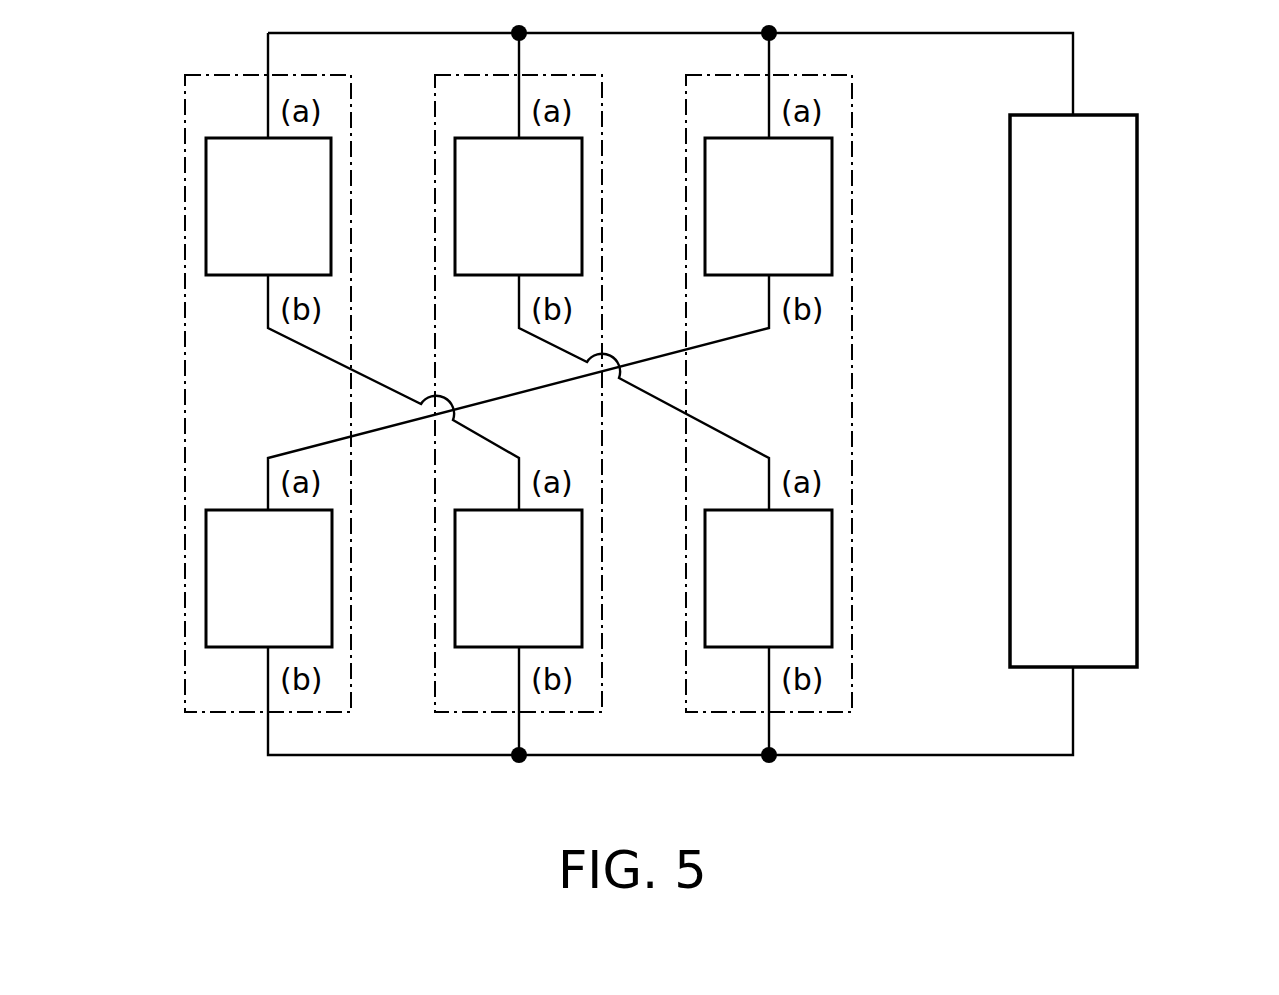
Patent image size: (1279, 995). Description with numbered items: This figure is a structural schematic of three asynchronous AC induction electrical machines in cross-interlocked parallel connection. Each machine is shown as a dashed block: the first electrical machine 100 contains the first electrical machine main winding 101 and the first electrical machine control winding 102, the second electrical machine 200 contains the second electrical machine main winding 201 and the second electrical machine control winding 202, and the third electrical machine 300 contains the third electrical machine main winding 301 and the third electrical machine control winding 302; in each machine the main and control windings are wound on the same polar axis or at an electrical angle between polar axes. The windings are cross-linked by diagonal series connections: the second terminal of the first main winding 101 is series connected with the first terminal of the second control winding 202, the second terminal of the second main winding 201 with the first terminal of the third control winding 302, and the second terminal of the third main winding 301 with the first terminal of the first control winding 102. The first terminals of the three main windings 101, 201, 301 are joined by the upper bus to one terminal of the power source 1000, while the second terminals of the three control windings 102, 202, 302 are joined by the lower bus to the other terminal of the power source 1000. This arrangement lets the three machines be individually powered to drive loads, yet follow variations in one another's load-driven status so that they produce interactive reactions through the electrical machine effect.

The first electrical machine 100 is at (185, 373).
The first electrical machine main winding 101 is at (206, 210).
The first electrical machine control winding 102 is at (206, 583).
The second electrical machine 200 is at (602, 328).
The second electrical machine main winding 201 is at (582, 167).
The second electrical machine control winding 202 is at (582, 557).
The third electrical machine 300 is at (852, 350).
The third electrical machine main winding 301 is at (832, 165).
The third electrical machine control winding 302 is at (832, 557).
The power source 1000 is at (1137, 433).